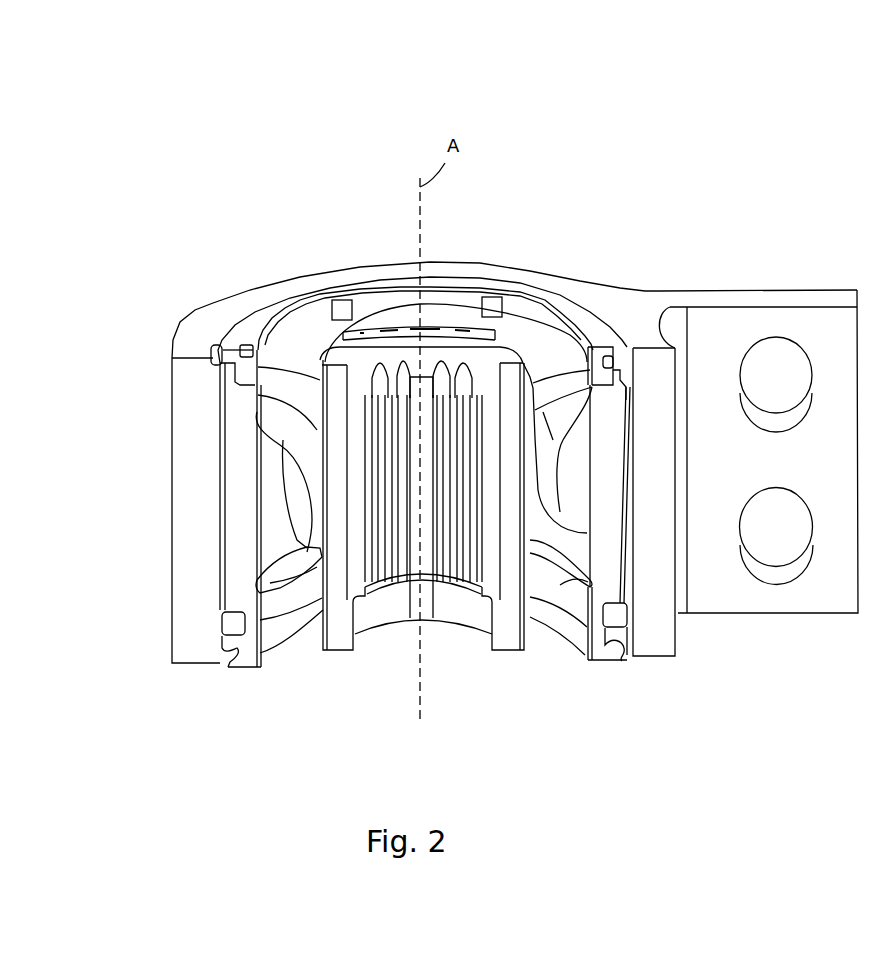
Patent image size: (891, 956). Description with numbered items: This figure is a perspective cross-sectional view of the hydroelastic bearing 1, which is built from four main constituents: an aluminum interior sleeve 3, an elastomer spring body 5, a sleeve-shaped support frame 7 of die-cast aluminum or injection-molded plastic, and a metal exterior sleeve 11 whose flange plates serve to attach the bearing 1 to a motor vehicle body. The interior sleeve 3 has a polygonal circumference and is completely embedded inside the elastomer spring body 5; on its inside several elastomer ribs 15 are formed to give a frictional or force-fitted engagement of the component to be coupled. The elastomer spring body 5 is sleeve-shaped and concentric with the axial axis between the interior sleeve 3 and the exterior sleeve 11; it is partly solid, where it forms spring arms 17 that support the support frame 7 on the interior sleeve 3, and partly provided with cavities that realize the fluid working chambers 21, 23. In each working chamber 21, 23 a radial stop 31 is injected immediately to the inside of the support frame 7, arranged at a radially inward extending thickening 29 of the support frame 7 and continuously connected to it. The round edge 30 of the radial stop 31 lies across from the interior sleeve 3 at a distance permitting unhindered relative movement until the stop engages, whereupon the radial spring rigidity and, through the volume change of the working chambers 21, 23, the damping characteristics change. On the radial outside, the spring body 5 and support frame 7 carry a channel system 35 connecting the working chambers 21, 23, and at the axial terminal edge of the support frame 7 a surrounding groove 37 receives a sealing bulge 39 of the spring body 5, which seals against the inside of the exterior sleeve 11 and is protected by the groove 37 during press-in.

The hydroelastic bearing 1 is at (663, 153).
The interior sleeve 3 is at (340, 637).
The elastomer spring body 5 is at (553, 600).
The support frame 7 is at (235, 673).
The exterior sleeve 11 is at (657, 647).
The ribs 15 is at (452, 365).
The spring arms 17 is at (285, 387).
The working chamber 21 is at (567, 407).
The working chamber 23 is at (285, 582).
The thickening 29 is at (220, 360).
The round edge 30 is at (283, 523).
The radial stop 31 is at (627, 358).
The channel system 35 is at (602, 627).
The groove 37 is at (605, 363).
The sealing bulge 39 is at (620, 653).